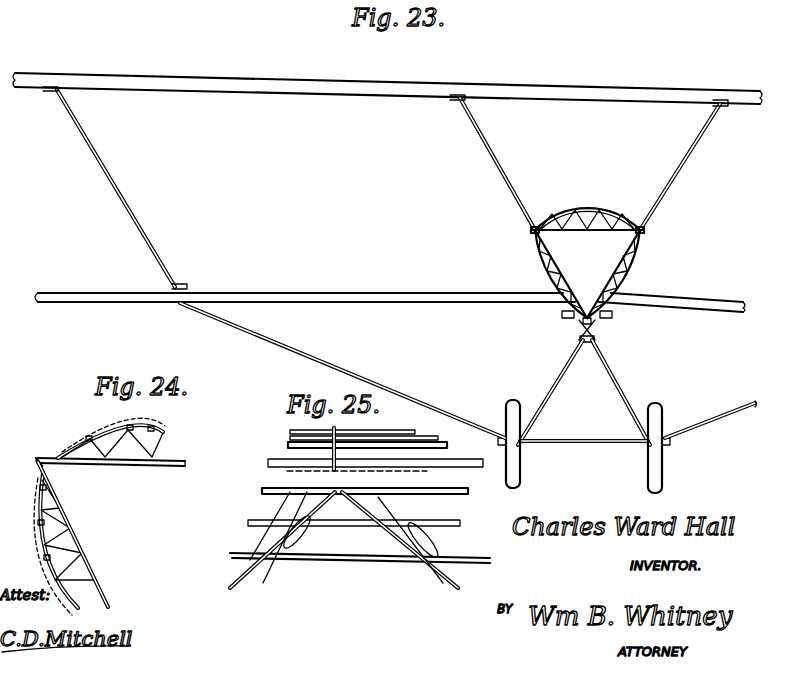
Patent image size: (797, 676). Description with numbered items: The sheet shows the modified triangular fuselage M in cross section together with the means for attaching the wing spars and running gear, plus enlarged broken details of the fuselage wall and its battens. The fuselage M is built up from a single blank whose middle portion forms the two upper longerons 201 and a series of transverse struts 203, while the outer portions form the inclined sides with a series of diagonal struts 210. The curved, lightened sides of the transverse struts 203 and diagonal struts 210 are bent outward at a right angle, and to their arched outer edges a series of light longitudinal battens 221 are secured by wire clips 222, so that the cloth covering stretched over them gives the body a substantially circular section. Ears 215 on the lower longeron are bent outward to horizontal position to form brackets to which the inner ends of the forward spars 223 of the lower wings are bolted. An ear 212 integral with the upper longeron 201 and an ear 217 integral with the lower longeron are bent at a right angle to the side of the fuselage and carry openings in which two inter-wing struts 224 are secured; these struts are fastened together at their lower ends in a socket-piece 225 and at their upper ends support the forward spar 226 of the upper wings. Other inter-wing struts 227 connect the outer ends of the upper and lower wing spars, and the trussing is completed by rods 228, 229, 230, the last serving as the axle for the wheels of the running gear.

In FIG. 23, the upper longeron 201 is at (535, 228).
In FIG. 24, the upper longeron 201 is at (42, 458).
In FIG. 25, the upper longeron 201 is at (400, 471).
In FIG. 23, the transverse strut 203 is at (608, 222).
In FIG. 24, the transverse strut 203 is at (170, 456).
In FIG. 25, the transverse strut 203 is at (332, 450).
In FIG. 23, the diagonal strut 210 is at (544, 272).
In FIG. 24, the diagonal strut 210 is at (82, 552).
In FIG. 25, the diagonal strut 210 is at (445, 548).
In FIG. 23, the ear 212 is at (533, 235).
In FIG. 23, the ear 215 is at (567, 316).
In FIG. 23, the ear 217 is at (583, 335).
In FIG. 24, the longitudinal batten 221 is at (120, 428).
In FIG. 25, the longitudinal batten 221 is at (392, 432).
In FIG. 25, the wire clip 222 is at (336, 445).
In FIG. 23, the forward spar of lower wing 223 is at (422, 297).
In FIG. 23, the inter-wing strut 224 is at (511, 183).
In FIG. 23, the socket-piece 225 is at (592, 335).
In FIG. 23, the forward spar of upper wing 226 is at (363, 67).
In FIG. 23, the inter-wing strut 227 is at (120, 192).
In FIG. 23, the rod 228 is at (610, 375).
In FIG. 23, the rod 229 is at (437, 408).
In FIG. 23, the rod (axle) 230 is at (584, 446).
In FIG. 23, the fuselage M is at (598, 199).